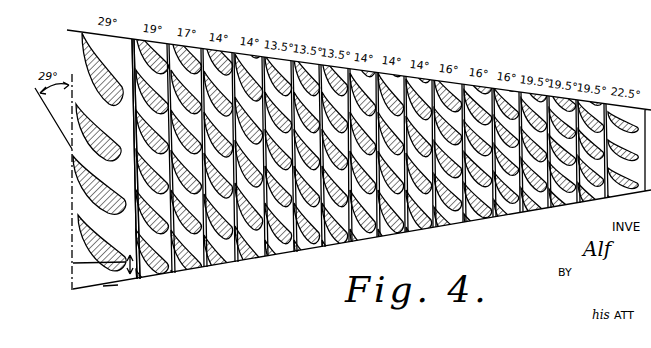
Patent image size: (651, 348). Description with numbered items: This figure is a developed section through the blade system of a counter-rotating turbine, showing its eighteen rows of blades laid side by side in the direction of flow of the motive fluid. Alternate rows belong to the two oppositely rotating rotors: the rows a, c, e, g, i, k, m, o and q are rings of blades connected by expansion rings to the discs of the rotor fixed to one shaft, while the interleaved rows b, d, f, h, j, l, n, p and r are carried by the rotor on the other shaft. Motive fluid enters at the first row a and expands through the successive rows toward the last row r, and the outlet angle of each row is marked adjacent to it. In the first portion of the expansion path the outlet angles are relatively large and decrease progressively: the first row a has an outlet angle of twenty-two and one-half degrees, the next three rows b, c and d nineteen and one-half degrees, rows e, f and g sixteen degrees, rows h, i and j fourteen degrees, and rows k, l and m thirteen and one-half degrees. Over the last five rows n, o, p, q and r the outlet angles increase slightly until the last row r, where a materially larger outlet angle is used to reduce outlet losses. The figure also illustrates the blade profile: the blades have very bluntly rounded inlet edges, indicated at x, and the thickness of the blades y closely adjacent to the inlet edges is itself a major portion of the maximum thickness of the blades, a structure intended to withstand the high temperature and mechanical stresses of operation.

The turbine blade row a is at (627, 188).
The turbine blade row b is at (593, 196).
The turbine blade row c is at (564, 201).
The turbine blade row d is at (536, 206).
The turbine blade row e is at (508, 211).
The turbine blade row f is at (480, 216).
The turbine blade row g is at (450, 221).
The turbine blade row h is at (421, 226).
The turbine blade row i is at (393, 231).
The turbine blade row j is at (365, 235).
The turbine blade row k is at (337, 240).
The turbine blade row l is at (309, 245).
The turbine blade row m is at (280, 250).
The turbine blade row n is at (251, 255).
The turbine blade row o is at (220, 260).
The turbine blade row p is at (188, 266).
The turbine blade row q is at (154, 272).
The turbine blade row r is at (114, 279).
The bluntly rounded inlet edge x is at (136, 275).
The blade thickness adjacent inlet edge y is at (96, 263).